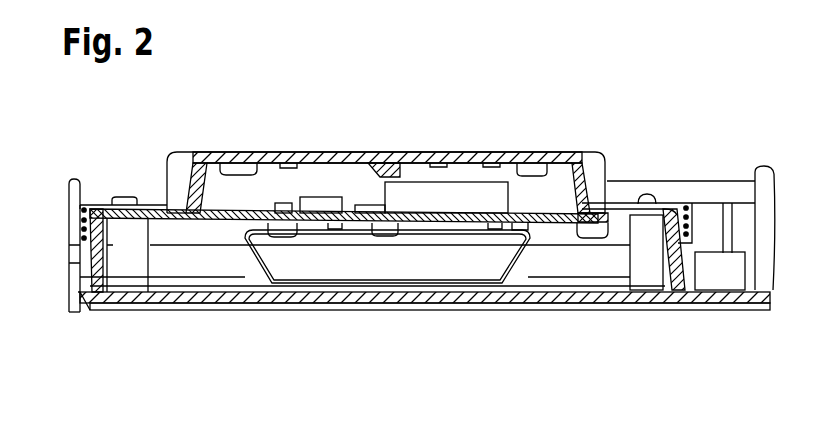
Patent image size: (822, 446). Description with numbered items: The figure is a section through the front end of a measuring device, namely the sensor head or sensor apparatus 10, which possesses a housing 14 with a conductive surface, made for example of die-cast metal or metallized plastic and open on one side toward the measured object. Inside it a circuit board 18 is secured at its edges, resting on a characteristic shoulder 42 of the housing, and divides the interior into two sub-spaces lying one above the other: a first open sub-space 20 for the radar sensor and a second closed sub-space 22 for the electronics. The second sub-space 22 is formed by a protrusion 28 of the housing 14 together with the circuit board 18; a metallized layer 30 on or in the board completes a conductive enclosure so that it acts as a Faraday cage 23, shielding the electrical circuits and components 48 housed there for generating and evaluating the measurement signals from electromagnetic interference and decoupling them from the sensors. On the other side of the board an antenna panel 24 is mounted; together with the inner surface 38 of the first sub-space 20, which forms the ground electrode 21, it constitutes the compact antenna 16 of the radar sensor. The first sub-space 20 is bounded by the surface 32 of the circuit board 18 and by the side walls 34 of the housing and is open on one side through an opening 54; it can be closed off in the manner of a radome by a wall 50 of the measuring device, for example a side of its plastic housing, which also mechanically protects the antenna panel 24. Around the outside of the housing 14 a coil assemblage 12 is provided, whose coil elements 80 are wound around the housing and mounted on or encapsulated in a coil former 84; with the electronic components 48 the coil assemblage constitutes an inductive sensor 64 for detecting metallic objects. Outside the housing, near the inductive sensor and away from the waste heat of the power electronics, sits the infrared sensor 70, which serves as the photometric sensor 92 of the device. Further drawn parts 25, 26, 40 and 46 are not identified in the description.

The sensor apparatus 10 is at (583, 138).
The coil assemblage 12 is at (69, 199).
The housing 14 is at (236, 160).
The antenna 16 is at (259, 278).
The circuit board 18 is at (552, 224).
The first sub-space 20 is at (535, 260).
The ground electrode 21 is at (148, 292).
The second sub-space 22 is at (233, 206).
The Faraday cage 23 is at (292, 177).
The antenna panel 24 is at (368, 284).
The bottom plate 25 is at (410, 310).
The housing frame 26 is at (602, 218).
The protrusion 28 is at (468, 173).
The metallized layer 30 is at (167, 205).
The surface 32 is at (571, 232).
The side walls 34 is at (72, 263).
The inner surface 38 is at (150, 295).
The connector housing 40 is at (112, 311).
The shoulder 42 is at (581, 200).
The connector housing wall 46 is at (132, 220).
The electrical circuits and components 48 is at (401, 176).
The wall 50 is at (80, 312).
The opening 54 is at (156, 227).
The inductive sensor 64 is at (98, 199).
The infrared sensor 70 is at (725, 275).
The coil elements 80 is at (82, 237).
The coil former 84 is at (72, 187).
The photometric sensor 92 is at (723, 312).